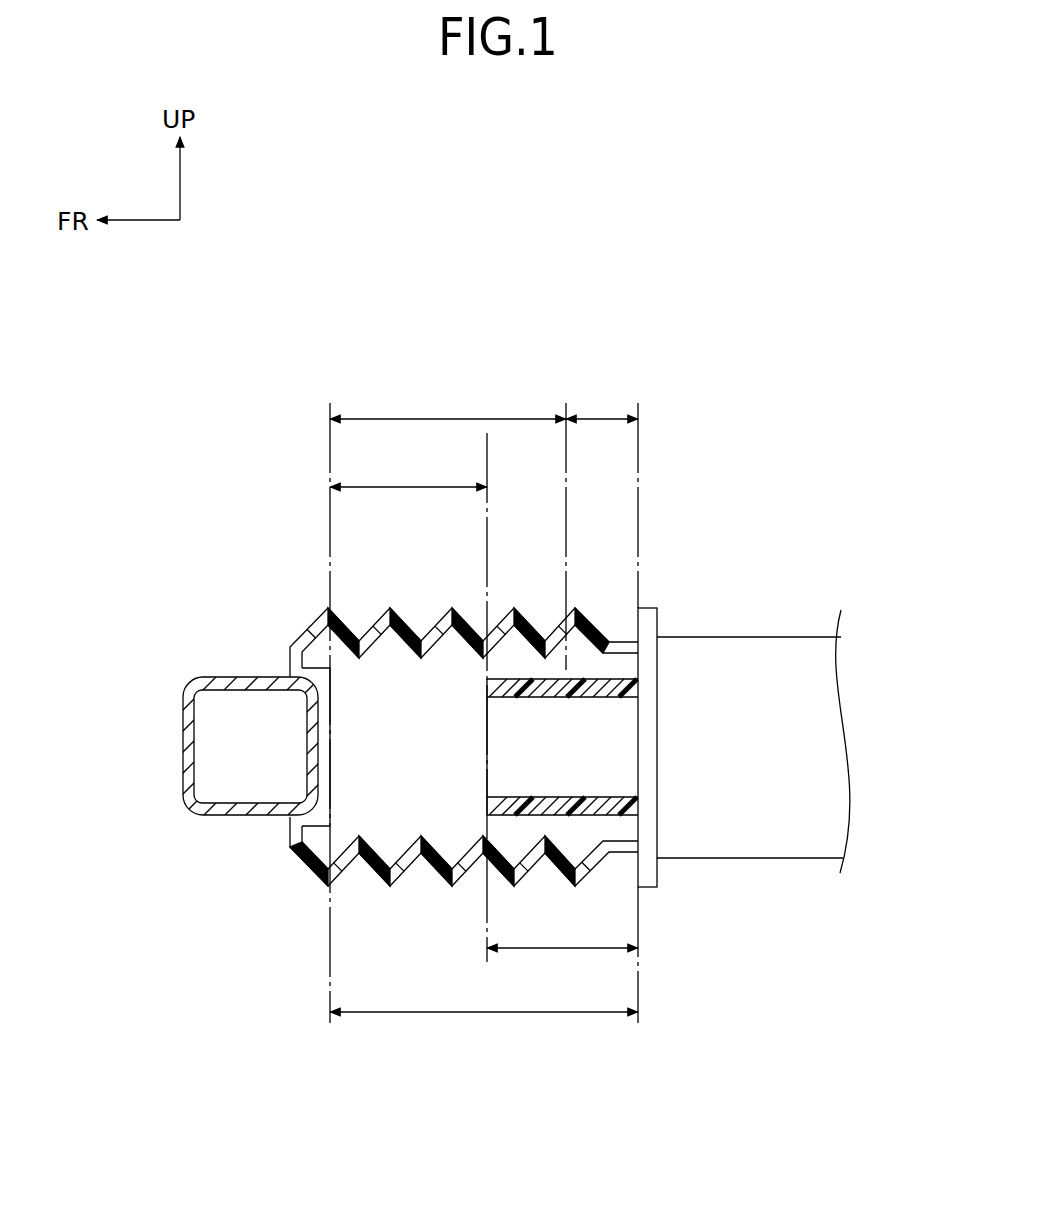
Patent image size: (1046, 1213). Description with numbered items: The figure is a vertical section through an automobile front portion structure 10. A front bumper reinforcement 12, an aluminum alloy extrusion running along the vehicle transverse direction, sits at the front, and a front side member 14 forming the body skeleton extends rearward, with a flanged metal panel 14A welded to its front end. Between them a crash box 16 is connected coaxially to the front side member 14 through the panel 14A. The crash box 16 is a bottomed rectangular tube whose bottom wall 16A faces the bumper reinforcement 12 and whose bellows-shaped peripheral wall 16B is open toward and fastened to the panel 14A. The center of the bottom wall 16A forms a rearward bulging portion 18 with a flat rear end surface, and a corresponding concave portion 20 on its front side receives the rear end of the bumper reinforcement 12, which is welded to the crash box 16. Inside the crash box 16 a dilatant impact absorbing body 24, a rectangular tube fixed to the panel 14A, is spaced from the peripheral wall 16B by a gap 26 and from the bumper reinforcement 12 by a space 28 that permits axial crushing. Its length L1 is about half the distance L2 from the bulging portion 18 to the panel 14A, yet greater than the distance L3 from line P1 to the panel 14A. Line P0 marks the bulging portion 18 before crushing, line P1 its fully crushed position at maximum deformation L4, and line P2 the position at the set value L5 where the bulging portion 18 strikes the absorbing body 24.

The automobile front portion structure 10 is at (748, 393).
The front bumper reinforcement 12 is at (183, 758).
The front side member 14 is at (765, 637).
The panel 14A is at (652, 606).
The crash box 16 is at (429, 778).
The bottom wall 16A is at (289, 650).
The peripheral wall 16B is at (386, 887).
The bulging portion 18 is at (332, 686).
The concave portion 20 is at (300, 802).
The dilatant impact absorbing body 24 is at (487, 780).
The gap 26 is at (568, 838).
The space 28 is at (418, 752).
The length dimension of the dilatant impact absorbing body L1 is at (560, 948).
The length dimension from the bulging portion to the panel L2 is at (455, 1012).
The rectilinear distance from line P1 to the panel L3 is at (602, 418).
The maximum value of the axial compressive deformation amount L4 is at (457, 418).
The set value of the axial compressive deformation amount L5 is at (412, 487).
The one-dot chain line P0 is at (330, 527).
The one-dot chain line P1 is at (566, 548).
The one-dot chain line P2 is at (487, 543).